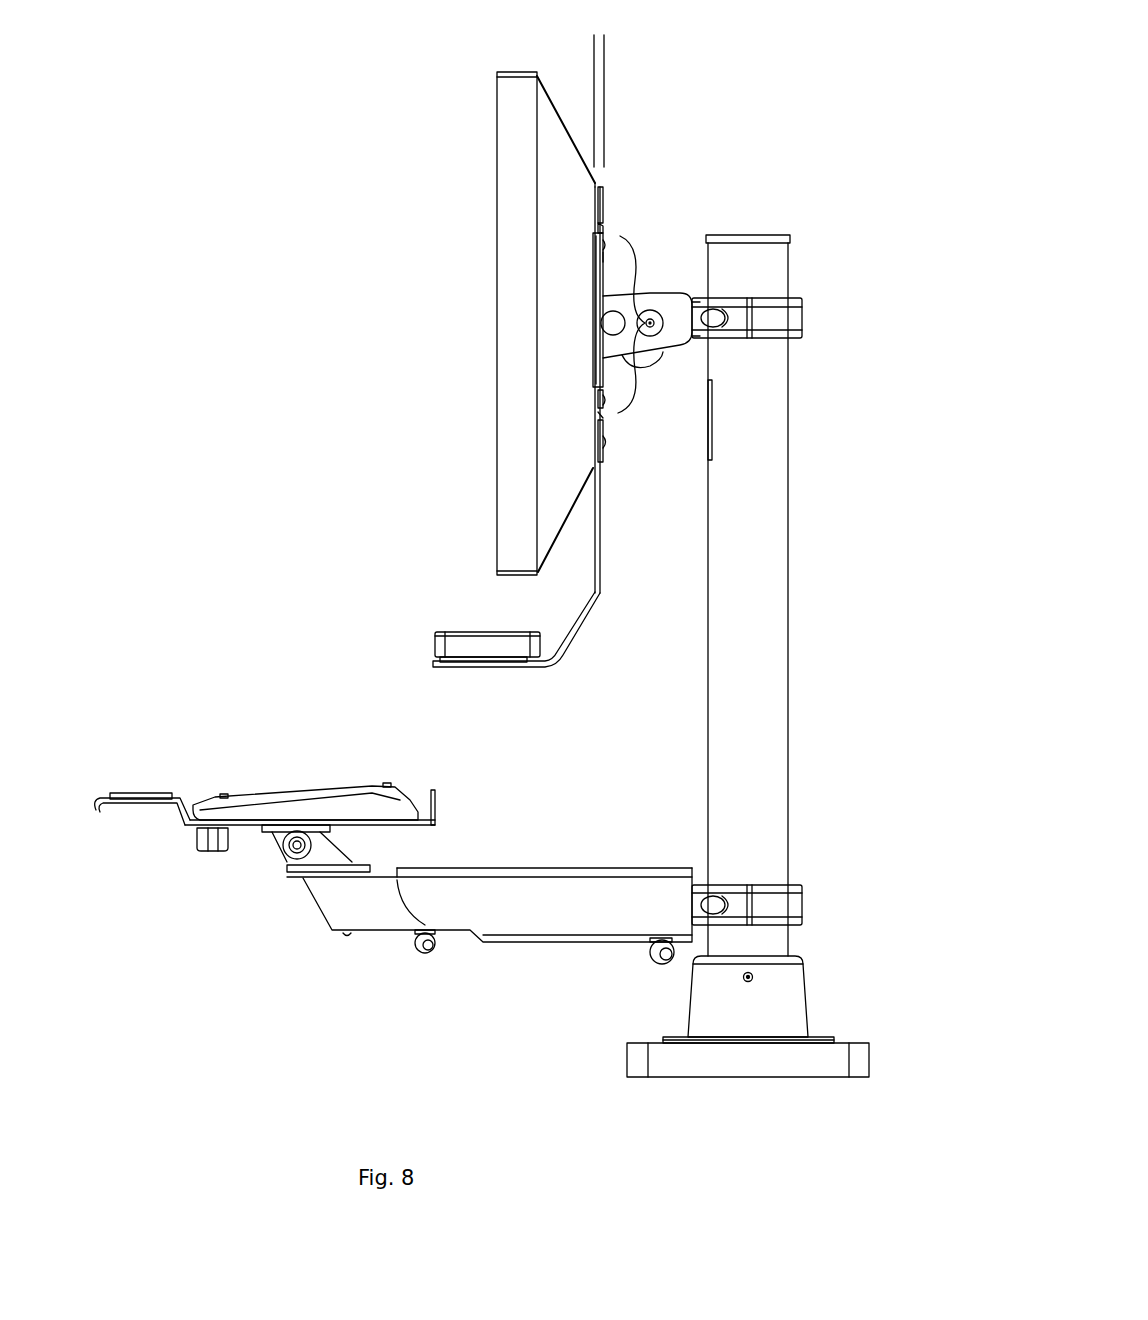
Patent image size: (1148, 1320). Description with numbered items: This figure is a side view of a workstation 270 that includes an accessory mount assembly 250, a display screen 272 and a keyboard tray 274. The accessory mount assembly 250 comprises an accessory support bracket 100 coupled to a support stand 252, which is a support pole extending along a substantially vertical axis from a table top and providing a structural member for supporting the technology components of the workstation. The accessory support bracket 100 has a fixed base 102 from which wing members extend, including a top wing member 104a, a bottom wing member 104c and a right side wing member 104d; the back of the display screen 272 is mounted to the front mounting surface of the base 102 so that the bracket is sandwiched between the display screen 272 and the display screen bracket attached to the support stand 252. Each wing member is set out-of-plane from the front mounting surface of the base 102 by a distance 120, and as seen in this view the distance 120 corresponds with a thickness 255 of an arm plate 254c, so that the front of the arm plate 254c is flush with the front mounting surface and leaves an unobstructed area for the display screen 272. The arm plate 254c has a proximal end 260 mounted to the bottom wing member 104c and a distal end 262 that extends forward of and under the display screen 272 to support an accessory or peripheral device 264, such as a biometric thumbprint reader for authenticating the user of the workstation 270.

The distance 120 is at (555, 48).
The workstation 270 is at (676, 115).
The accessory mount assembly 250 is at (743, 210).
The support stand 252 is at (790, 467).
The accessory support bracket 100 is at (648, 247).
The base 102 is at (636, 330).
The top wing member 104a is at (608, 188).
The bottom wing member 104c is at (608, 423).
The right side wing member 104d is at (597, 317).
The display screen 272 is at (497, 357).
The proximal end 260 is at (597, 425).
The thickness 255 is at (567, 551).
The arm plate 254c is at (600, 582).
The accessory or peripheral device 264 is at (468, 632).
The distal end 262 is at (433, 664).
The keyboard tray 274 is at (253, 825).